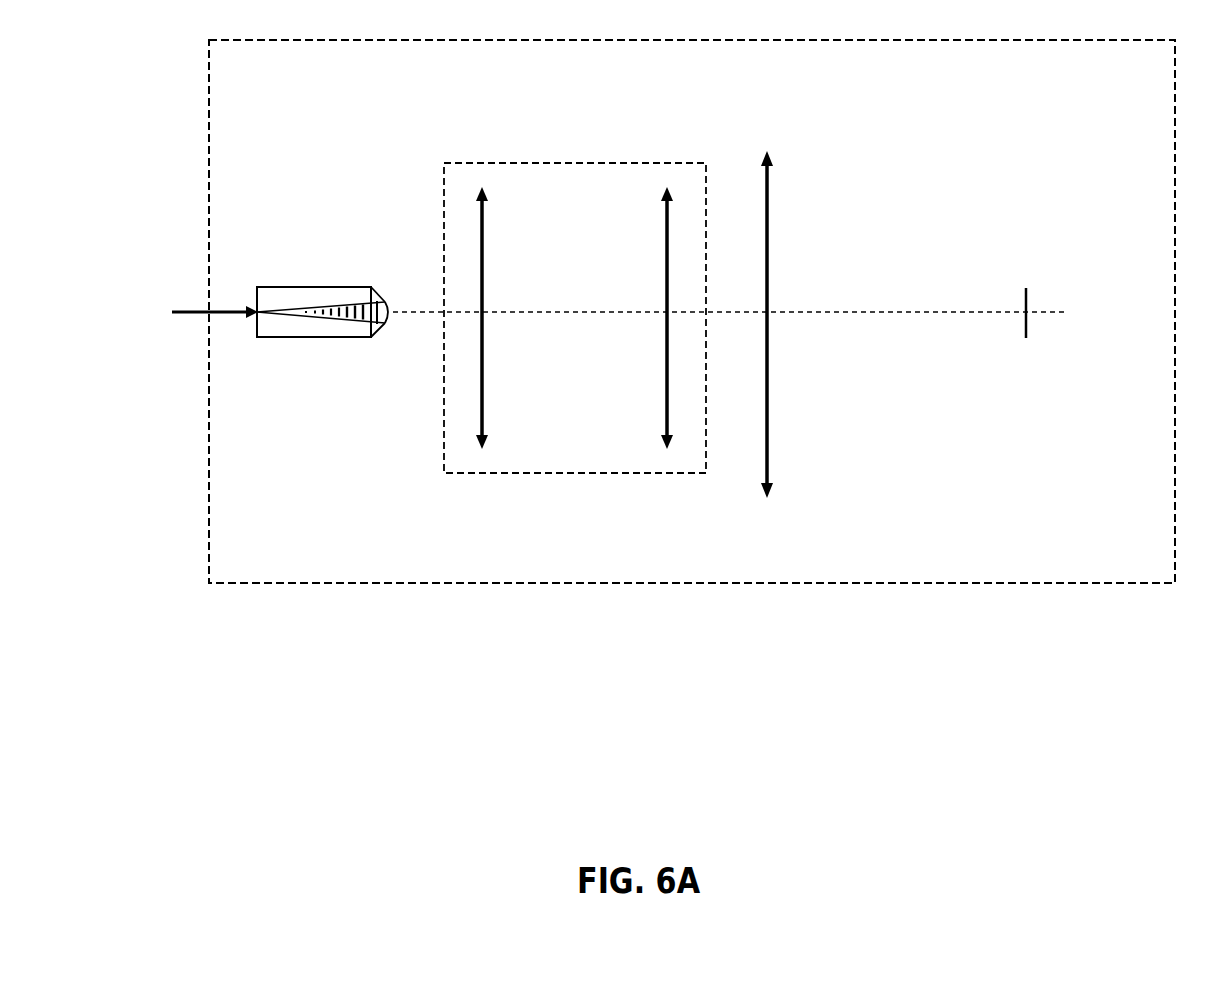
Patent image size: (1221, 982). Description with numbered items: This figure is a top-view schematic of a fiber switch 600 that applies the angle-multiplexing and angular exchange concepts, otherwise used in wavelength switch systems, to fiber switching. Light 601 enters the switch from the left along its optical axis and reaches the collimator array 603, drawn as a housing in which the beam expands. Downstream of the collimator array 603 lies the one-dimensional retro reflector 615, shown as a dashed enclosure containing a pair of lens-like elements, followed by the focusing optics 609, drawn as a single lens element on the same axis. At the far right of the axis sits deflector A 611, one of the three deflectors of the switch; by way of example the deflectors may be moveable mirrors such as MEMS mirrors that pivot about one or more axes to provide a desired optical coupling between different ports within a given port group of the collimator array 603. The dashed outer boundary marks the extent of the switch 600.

The switch 600 is at (340, 583).
The input light beam 601 is at (184, 285).
The collimator array 603 is at (305, 286).
The focusing optics 609 is at (767, 500).
The deflector A 611 is at (1027, 340).
The 1-D retro reflector 615 is at (590, 140).